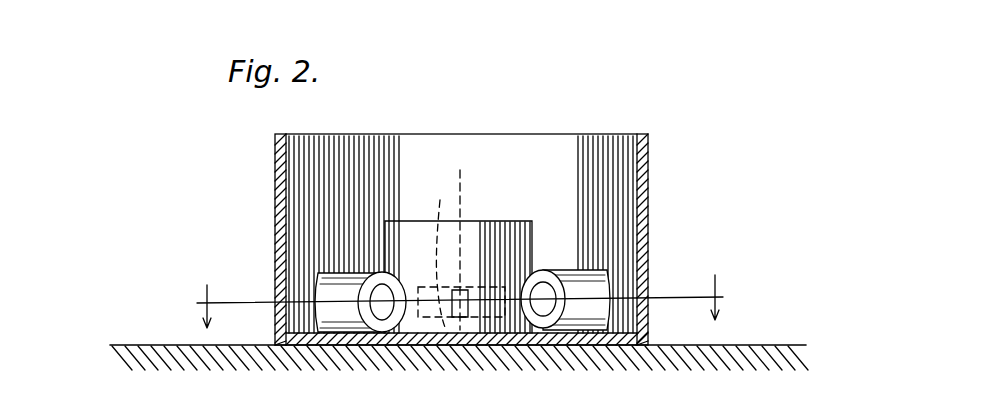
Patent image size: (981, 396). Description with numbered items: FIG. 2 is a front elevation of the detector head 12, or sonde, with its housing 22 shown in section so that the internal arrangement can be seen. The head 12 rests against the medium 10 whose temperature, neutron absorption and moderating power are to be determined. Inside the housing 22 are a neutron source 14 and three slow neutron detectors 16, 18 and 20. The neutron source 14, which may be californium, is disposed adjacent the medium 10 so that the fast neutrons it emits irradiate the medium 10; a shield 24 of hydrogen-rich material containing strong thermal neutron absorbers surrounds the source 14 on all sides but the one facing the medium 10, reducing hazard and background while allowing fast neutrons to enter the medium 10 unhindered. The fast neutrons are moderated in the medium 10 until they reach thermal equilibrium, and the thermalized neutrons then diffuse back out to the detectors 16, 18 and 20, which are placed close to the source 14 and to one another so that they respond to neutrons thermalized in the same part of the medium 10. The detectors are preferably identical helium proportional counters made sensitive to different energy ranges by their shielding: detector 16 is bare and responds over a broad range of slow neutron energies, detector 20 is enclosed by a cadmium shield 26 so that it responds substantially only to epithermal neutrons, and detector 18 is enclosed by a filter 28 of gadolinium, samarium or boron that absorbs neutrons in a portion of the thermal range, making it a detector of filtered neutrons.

The medium 10 is at (672, 384).
The detector head 12 is at (260, 208).
The neutron source 14 is at (437, 346).
The slow neutron detector 16 is at (461, 250).
The slow neutron detector 18 is at (384, 333).
The slow neutron detector 20 is at (565, 326).
The housing 22 is at (275, 147).
The shield 24 is at (486, 221).
The shield 26 is at (606, 333).
The filter 28 is at (326, 275).